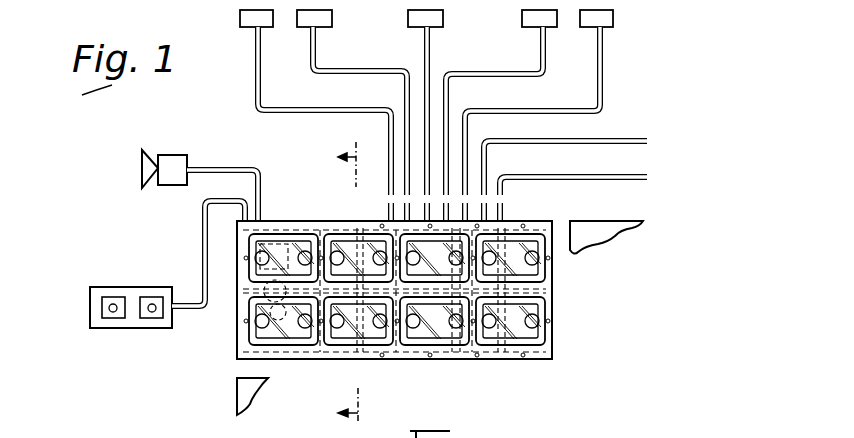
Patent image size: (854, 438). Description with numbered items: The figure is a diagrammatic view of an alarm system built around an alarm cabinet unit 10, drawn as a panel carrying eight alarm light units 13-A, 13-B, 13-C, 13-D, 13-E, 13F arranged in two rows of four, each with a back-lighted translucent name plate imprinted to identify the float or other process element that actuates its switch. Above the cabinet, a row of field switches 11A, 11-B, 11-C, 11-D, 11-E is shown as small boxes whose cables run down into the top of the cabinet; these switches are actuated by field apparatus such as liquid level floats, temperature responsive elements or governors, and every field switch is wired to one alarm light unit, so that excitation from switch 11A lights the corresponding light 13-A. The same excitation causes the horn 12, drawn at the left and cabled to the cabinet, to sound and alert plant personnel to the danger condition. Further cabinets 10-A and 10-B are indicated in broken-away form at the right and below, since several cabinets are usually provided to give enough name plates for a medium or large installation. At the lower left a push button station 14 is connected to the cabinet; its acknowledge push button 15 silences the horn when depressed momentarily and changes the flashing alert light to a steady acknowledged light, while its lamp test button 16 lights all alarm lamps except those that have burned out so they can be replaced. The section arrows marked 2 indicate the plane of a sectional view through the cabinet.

The alarm cabinet unit 10 is at (553, 333).
The alarm cabinet unit 10-A is at (610, 220).
The alarm cabinet unit 10-B is at (237, 397).
The field switch 11A is at (240, 17).
The field switch 11-B is at (297, 20).
The field switch 11-C is at (408, 20).
The field switch 11-D is at (522, 19).
The field switch 11-E is at (580, 20).
The horn 12 is at (142, 170).
The alarm light unit 13-A is at (286, 244).
The alarm light unit 13-B is at (294, 342).
The alarm light unit 13-C is at (350, 245).
The alarm light unit 13-D is at (350, 342).
The alarm light unit 13-E is at (447, 247).
The alarm light unit 13F is at (426, 345).
The push button station 14 is at (167, 278).
The acknowledge push button 15 is at (112, 313).
The lamp test button 16 is at (151, 313).
The section line 2- 2 is at (356, 287).